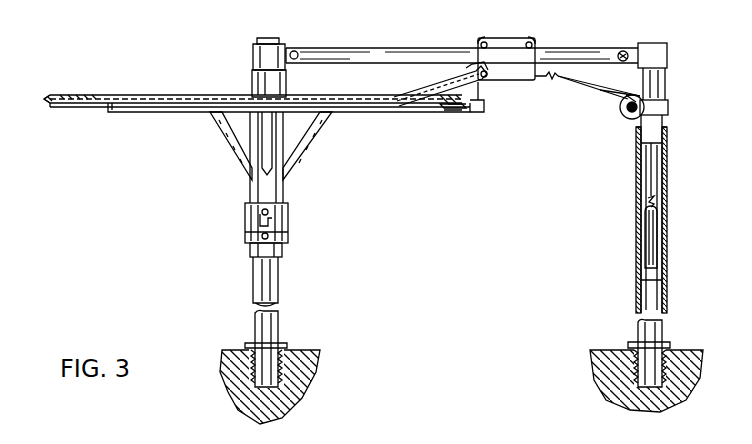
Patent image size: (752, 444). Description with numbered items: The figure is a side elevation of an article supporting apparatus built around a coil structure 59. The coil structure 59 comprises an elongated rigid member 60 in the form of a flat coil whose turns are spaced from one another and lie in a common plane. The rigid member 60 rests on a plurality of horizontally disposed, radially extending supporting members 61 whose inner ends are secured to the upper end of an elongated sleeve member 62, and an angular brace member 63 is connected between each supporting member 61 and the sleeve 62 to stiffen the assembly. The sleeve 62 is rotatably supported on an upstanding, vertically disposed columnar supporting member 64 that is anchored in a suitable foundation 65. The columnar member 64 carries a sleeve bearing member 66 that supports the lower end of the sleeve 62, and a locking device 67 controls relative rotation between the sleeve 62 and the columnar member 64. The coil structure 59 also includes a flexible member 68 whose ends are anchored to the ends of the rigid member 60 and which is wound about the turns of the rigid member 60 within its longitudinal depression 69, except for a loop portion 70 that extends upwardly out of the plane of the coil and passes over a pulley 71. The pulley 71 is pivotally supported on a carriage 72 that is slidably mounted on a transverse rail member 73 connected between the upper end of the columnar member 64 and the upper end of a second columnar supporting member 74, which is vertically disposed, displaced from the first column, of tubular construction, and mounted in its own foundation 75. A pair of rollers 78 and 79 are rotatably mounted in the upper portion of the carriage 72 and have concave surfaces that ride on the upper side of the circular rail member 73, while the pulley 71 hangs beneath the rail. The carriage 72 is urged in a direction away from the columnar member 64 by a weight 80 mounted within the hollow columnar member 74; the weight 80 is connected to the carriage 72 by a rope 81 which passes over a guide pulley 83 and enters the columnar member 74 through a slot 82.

The coil structure 59 is at (238, 94).
The elongated rigid member 60 is at (70, 68).
The supporting member 61 is at (136, 113).
The elongated sleeve member 62 is at (252, 78).
The angular brace member 63 is at (226, 142).
The columnar supporting member 64 is at (253, 276).
The foundation 65 is at (230, 350).
The sleeve bearing member 66 is at (288, 250).
The locking device 67 is at (238, 233).
The flexible member 68 is at (96, 104).
The longitudinal depression 69 is at (47, 101).
The loop portion 70 is at (414, 92).
The pulley 71 is at (482, 88).
The carriage 72 is at (506, 39).
The transverse rail member 73 is at (382, 30).
The columnar supporting member 74 is at (667, 183).
The foundation 75 is at (606, 350).
The roller 78 is at (533, 38).
The roller 79 is at (478, 38).
The weight 80 is at (659, 228).
The rope 81 is at (593, 88).
The slot 82 is at (636, 90).
The guide pulley 83 is at (624, 118).